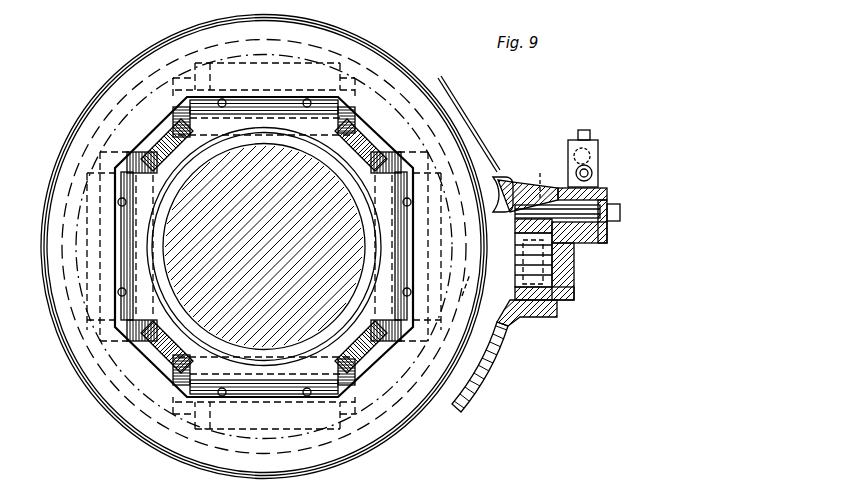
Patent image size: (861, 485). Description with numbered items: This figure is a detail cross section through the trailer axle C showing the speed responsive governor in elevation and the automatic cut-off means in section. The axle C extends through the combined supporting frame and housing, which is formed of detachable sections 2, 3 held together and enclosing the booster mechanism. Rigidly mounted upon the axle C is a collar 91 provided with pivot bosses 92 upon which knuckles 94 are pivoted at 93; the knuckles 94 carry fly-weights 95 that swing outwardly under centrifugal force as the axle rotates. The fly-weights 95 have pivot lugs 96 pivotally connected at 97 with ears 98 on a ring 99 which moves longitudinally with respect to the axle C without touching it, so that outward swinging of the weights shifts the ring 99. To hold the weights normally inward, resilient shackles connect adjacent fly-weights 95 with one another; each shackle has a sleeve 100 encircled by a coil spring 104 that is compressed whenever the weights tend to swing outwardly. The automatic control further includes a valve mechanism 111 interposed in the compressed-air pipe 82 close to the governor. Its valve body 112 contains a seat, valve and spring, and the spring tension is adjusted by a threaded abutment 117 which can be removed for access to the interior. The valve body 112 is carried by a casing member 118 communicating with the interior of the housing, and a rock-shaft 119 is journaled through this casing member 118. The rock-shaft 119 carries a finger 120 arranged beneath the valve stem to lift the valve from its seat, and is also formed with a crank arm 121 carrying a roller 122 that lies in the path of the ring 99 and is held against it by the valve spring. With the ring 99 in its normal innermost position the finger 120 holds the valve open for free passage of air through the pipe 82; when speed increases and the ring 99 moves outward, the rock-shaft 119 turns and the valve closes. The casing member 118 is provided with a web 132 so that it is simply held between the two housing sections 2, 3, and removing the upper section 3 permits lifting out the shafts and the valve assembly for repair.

The housing section 2 is at (476, 378).
The upper housing section 3 is at (470, 116).
The pipe 82 is at (594, 172).
The collar 91 is at (186, 176).
The pivot bosses 92 is at (258, 108).
The pivot 93 is at (182, 102).
The knuckles 94 is at (128, 152).
The fly-weights 95 is at (283, 58).
The pivot lugs 96 is at (334, 66).
The pivotal connection 97 is at (236, 62).
The ears 98 is at (318, 64).
The ring 99 is at (60, 328).
The sleeve 100 is at (150, 136).
The coil spring 104 is at (356, 148).
The valve mechanism 111 is at (570, 148).
The valve body 112 is at (598, 152).
The threaded abutment 117 is at (590, 134).
The casing member 118 is at (562, 280).
The rock-shaft 119 is at (547, 178).
The finger 120 is at (600, 222).
The crank arm 121 is at (496, 192).
The roller 122 is at (462, 285).
The web 132 is at (538, 318).
The trailer axle C is at (214, 176).